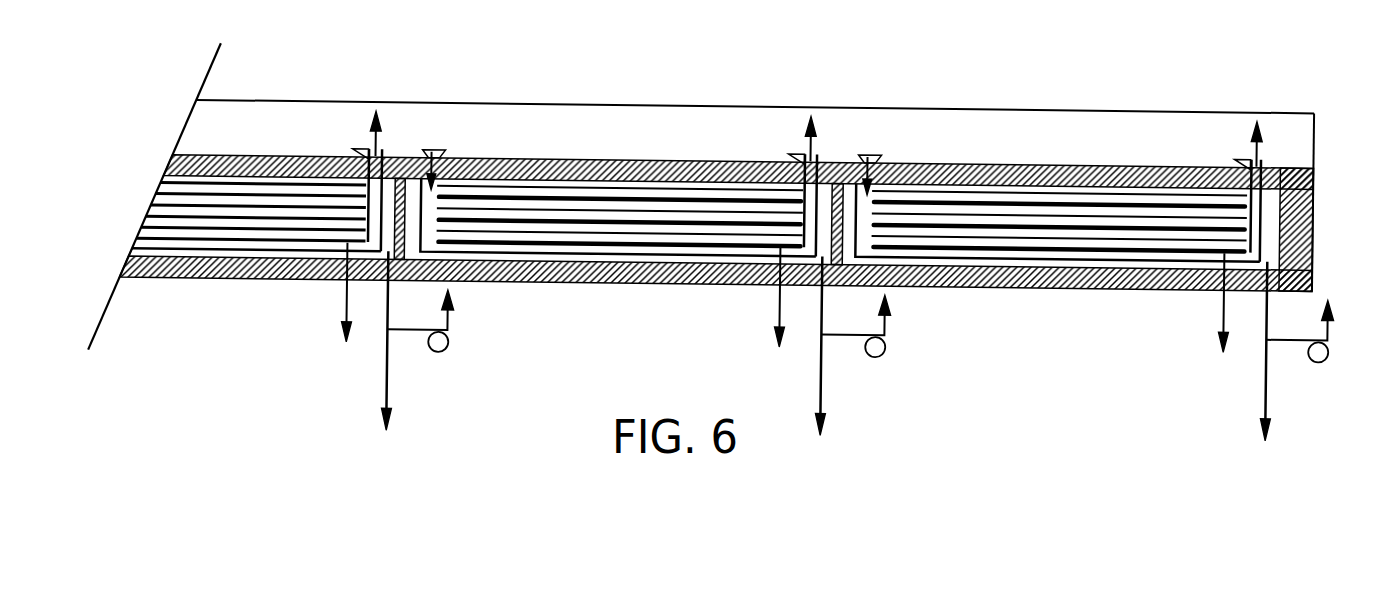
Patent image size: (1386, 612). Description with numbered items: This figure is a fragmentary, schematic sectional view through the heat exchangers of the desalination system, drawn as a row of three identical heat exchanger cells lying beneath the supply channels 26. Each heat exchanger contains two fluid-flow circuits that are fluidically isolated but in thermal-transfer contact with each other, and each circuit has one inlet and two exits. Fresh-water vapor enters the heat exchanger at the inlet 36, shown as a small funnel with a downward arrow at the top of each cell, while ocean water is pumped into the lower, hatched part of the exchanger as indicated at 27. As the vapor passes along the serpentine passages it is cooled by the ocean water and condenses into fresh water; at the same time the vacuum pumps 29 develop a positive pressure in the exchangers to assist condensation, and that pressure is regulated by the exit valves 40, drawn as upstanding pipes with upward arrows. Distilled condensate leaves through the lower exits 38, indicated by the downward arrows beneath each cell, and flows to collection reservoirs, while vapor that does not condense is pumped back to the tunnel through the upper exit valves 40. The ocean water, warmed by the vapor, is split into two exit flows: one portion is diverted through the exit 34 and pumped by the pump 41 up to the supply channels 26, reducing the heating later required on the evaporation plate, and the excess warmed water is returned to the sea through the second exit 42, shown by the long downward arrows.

The supply channel 26 is at (1121, 148).
The ocean water inlet 27 is at (1073, 285).
The vacuum pump 29 is at (863, 152).
The exit for warmed ocean water to supply channels 34 is at (1334, 322).
The fresh-water vapor inlet 36 is at (872, 152).
The lower exit 38 is at (1223, 317).
The upper exit valve 40 is at (1256, 141).
The pump 41 is at (1327, 353).
The second exit 42 is at (1267, 392).